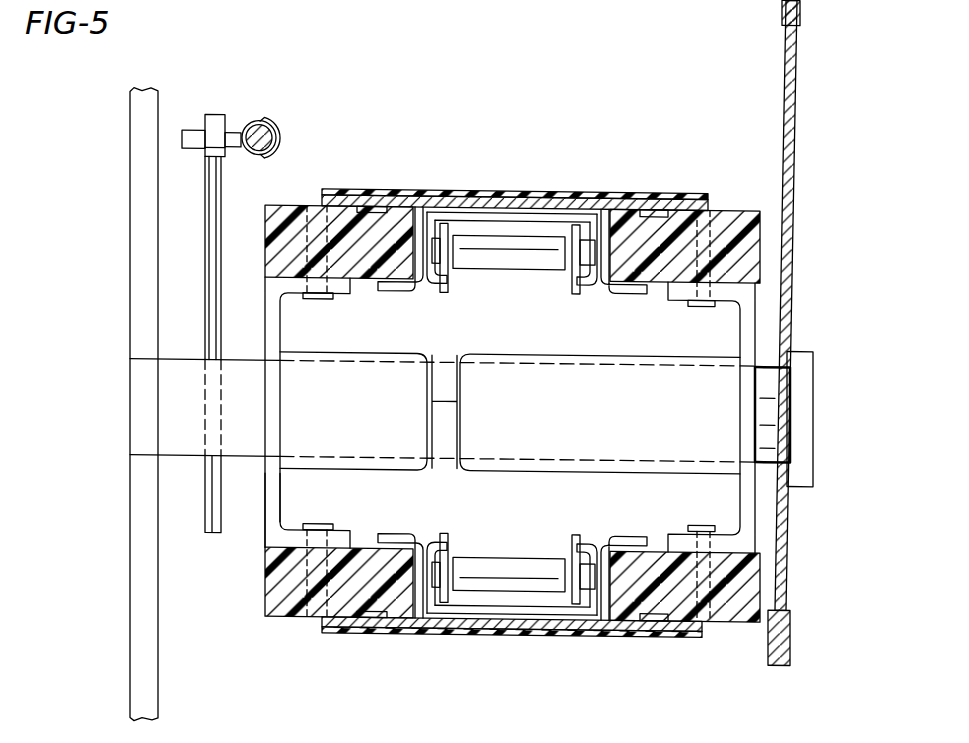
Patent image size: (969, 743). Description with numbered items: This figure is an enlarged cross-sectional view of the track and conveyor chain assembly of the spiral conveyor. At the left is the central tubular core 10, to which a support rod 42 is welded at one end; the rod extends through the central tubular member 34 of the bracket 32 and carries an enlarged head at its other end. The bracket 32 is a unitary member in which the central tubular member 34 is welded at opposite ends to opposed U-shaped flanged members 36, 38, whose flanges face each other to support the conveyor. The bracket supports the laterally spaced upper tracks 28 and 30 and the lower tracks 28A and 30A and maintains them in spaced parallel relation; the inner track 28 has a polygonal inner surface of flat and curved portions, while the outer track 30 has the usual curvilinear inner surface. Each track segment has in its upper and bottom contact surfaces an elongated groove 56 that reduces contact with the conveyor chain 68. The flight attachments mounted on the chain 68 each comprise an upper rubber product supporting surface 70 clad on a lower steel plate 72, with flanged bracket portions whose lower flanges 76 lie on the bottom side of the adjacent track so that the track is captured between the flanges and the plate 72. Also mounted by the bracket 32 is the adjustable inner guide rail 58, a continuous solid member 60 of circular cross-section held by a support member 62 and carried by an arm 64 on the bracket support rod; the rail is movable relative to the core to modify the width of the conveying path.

The core 10 is at (128, 520).
The upper inner track 28 is at (292, 201).
The lower track 28A is at (270, 614).
The upper outer track 30 is at (748, 203).
The lower track 30A is at (728, 613).
The bracket 32 is at (300, 301).
The central tubular member 34 is at (527, 346).
The U-shaped flanged member 36 is at (275, 507).
The U-shaped flanged member 38 is at (745, 481).
The support rod 42 is at (797, 99).
The groove 56 is at (645, 198).
The adjustable inner guide rail 58 is at (258, 115).
The continuous solid member 60 is at (278, 127).
The cross pin 62 is at (206, 126).
The arm 64 is at (206, 288).
The conveyor chain 68 is at (445, 543).
The rubber product supporting surface 70 is at (470, 185).
The steel plate 72 is at (710, 187).
The lower flanges 76 is at (622, 283).